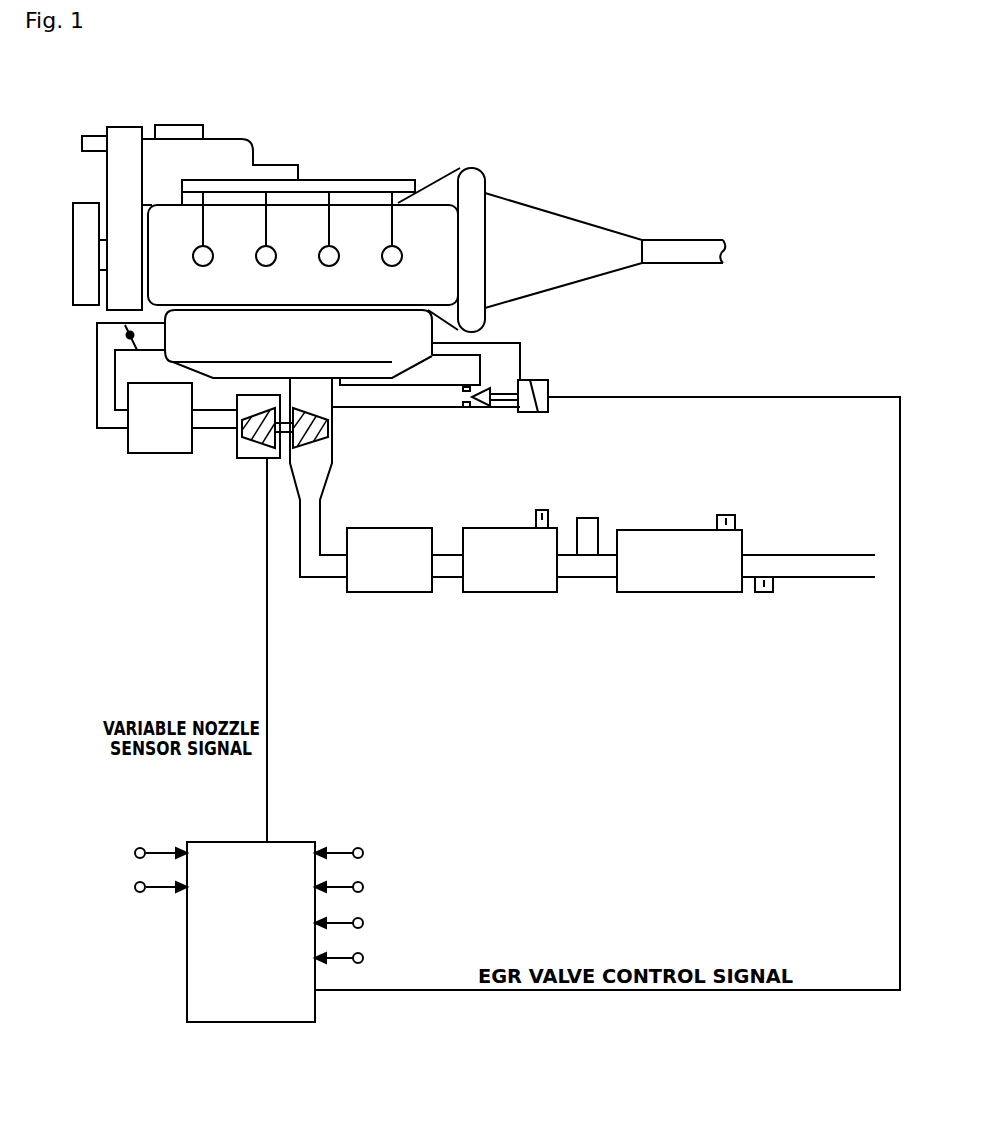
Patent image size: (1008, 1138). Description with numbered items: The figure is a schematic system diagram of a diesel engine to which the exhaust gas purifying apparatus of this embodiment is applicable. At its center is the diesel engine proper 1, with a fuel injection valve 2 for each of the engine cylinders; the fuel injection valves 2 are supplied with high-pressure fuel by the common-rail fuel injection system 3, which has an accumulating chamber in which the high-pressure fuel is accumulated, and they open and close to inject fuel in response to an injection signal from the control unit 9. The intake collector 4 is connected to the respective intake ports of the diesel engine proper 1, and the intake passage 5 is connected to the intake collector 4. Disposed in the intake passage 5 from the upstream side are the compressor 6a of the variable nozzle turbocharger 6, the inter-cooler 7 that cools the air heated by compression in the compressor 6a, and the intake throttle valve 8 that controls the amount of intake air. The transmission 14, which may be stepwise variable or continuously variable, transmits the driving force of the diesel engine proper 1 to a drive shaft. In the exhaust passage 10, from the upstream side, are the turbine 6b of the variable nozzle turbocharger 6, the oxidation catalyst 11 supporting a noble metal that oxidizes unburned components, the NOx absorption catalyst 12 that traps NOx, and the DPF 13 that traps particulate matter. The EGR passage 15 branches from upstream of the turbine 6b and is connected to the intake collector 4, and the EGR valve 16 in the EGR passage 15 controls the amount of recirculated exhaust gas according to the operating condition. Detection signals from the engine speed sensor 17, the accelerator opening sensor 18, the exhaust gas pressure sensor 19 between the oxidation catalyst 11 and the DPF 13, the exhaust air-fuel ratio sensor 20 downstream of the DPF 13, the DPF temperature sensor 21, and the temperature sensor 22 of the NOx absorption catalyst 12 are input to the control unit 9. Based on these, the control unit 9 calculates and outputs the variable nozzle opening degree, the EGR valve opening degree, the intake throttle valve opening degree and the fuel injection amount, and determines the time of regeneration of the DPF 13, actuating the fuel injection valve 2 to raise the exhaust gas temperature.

The diesel engine proper 1 is at (437, 225).
The fuel injection valve 2 is at (266, 246).
The common-rail fuel injection system 3 is at (400, 185).
The intake collector 4 is at (398, 350).
The intake passage 5 is at (97, 380).
The variable nozzle turbocharger 6 is at (303, 457).
The compressor 6a is at (253, 437).
The turbine 6b is at (333, 433).
The inter-cooler 7 is at (147, 455).
The intake throttle valve 8 is at (125, 327).
The control unit (ECU) 9 is at (245, 1022).
The exhaust passage 10 is at (323, 505).
The oxidation catalyst 11 is at (392, 592).
The NOx absorption catalyst 12 is at (512, 592).
The diesel particulate filter (DPF) 13 is at (675, 592).
The transmission 14 is at (543, 240).
The EGR passage 15 is at (448, 410).
The EGR valve 16 is at (530, 413).
The engine speed sensor 17 is at (92, 143).
The accelerator opening sensor 18 is at (144, 888).
The exhaust gas pressure sensor 19 is at (590, 518).
The exhaust air-fuel ratio sensor 20 is at (765, 592).
The DPF temperature sensor 21 is at (727, 515).
The temperature sensor 22 is at (542, 512).